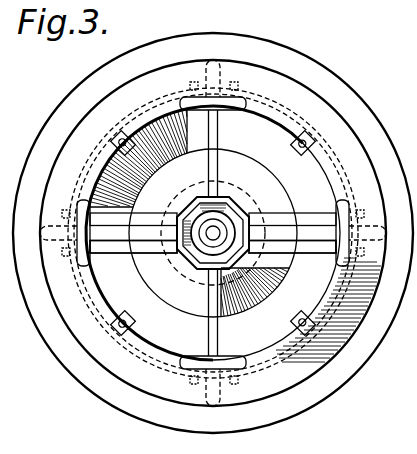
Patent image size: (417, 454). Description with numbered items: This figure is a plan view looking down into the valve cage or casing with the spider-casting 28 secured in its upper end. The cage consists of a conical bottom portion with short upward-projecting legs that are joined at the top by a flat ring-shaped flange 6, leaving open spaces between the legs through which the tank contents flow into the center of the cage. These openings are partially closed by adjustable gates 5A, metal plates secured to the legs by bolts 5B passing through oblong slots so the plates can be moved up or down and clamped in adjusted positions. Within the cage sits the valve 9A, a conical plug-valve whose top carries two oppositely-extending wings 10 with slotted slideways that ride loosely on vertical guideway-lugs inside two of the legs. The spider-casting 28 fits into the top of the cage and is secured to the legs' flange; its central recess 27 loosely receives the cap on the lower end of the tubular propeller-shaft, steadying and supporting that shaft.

The adjustable gate 5A is at (297, 115).
The bolt 5B is at (233, 87).
The flat ring-shaped flange 6 is at (355, 150).
The wing 10 is at (311, 214).
The recess 27 is at (232, 206).
The spider-casting 28 is at (305, 255).
The valve 9A is at (168, 300).